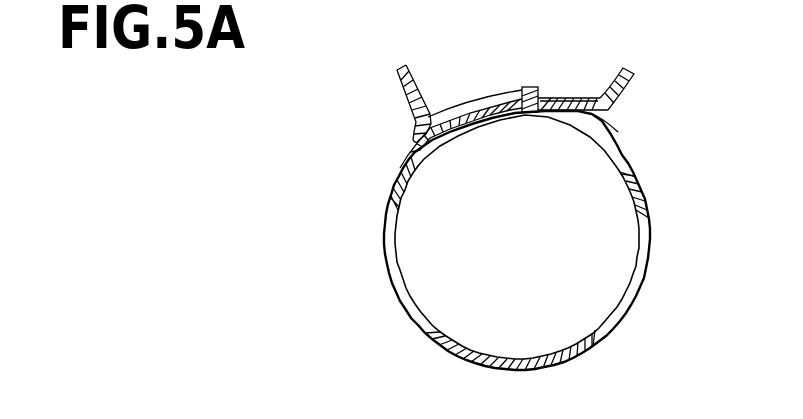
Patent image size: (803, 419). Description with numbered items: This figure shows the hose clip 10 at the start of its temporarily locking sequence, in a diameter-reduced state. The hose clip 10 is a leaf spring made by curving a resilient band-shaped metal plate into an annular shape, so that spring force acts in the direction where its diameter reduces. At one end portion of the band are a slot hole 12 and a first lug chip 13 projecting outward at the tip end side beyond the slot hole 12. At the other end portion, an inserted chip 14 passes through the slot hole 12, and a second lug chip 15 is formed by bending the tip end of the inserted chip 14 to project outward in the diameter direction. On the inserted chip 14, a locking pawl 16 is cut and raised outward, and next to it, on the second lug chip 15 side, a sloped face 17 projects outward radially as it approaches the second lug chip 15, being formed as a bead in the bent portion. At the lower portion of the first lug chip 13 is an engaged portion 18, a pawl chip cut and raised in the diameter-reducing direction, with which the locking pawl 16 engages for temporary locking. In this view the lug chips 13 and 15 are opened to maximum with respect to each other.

The hose clip 10 is at (358, 212).
The slot hole 12 is at (517, 240).
The first lug chip 13 is at (397, 88).
The inserted chip 14 is at (456, 153).
The second lug chip 15 is at (634, 82).
The locking pawl 16 is at (512, 66).
The sloped face 17 is at (573, 65).
The engaged portion 18 is at (413, 128).